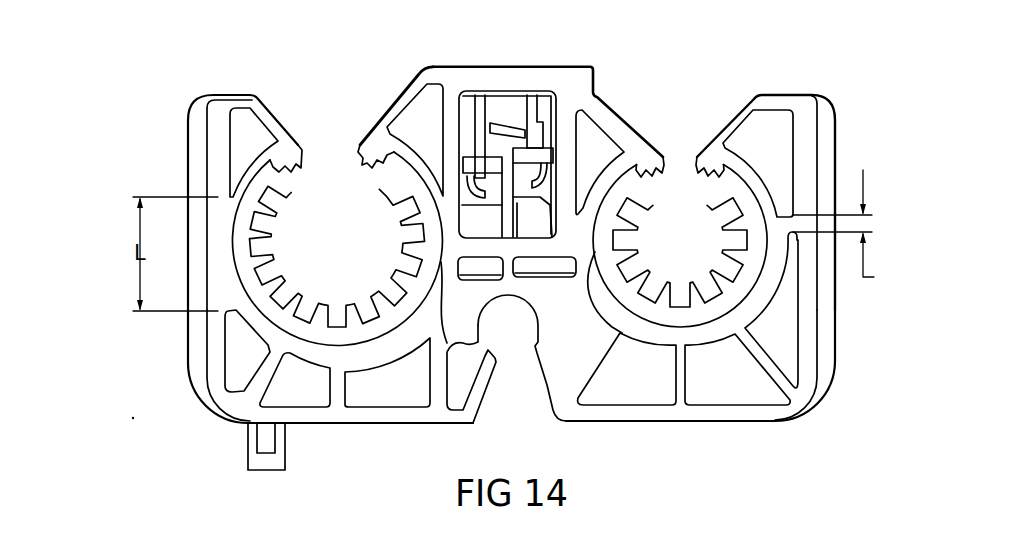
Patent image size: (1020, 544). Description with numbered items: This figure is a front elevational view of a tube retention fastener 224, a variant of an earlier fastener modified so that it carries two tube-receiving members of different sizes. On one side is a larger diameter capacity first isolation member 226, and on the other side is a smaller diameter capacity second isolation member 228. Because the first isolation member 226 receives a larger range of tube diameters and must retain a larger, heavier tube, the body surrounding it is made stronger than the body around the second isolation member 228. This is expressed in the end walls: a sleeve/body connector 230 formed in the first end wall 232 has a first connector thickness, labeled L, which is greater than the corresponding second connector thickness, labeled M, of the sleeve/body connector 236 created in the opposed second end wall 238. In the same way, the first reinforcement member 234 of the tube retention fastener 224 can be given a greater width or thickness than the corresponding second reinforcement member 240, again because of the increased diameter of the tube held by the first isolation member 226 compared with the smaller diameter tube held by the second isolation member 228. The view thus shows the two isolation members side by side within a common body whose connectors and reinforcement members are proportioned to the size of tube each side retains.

The tube retention fastener 224 is at (730, 70).
The first isolation member 226 is at (282, 316).
The second isolation member 228 is at (703, 320).
The sleeve/body connector 230 is at (236, 213).
The first end wall 232 is at (215, 349).
The first reinforcement member 234 is at (193, 157).
The sleeve/body connector 236 is at (787, 223).
The second end wall 238 is at (808, 332).
The second reinforcement member 240 is at (828, 152).